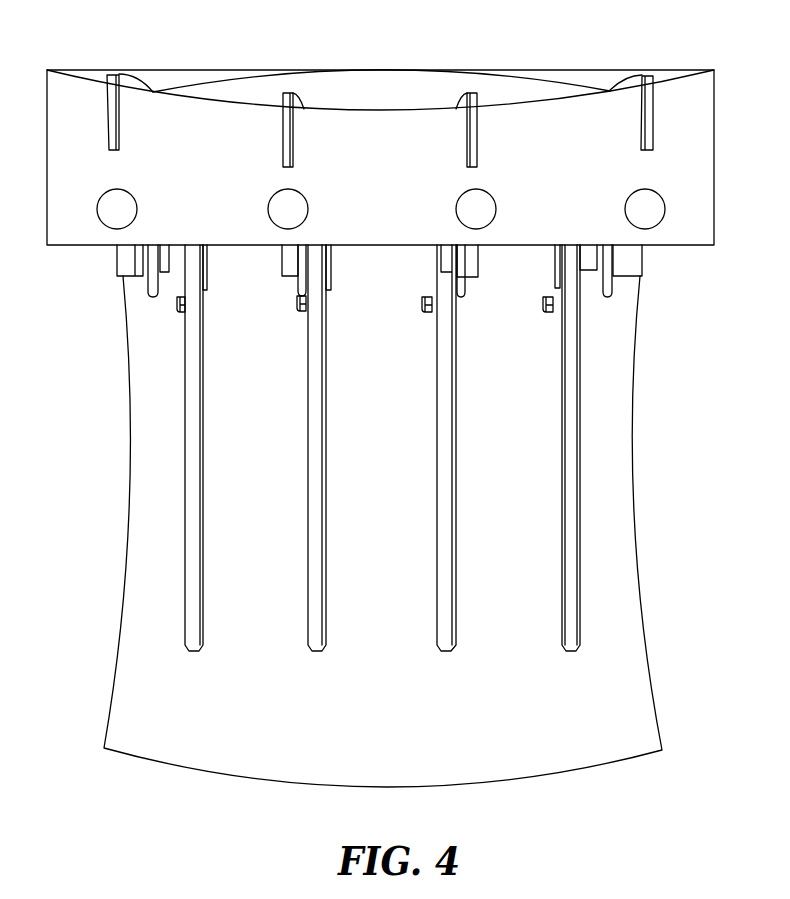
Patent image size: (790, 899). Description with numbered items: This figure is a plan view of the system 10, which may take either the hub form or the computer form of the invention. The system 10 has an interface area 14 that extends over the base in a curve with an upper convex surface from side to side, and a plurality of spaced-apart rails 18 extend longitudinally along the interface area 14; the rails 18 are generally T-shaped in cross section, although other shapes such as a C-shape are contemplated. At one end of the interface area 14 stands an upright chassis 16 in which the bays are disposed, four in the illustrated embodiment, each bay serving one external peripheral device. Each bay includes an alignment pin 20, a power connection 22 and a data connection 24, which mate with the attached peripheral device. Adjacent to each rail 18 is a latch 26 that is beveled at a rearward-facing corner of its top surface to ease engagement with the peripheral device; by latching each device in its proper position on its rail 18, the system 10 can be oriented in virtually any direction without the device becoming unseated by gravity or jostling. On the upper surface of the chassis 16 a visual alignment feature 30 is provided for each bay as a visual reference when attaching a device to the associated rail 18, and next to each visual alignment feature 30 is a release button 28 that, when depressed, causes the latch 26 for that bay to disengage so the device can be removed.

The system 10 is at (183, 788).
The interface area 14 is at (389, 751).
The chassis 16 is at (392, 230).
The rails 18 is at (198, 650).
The alignment pin 20 is at (153, 293).
The power connection 22 is at (596, 268).
The data connection 24 is at (643, 262).
The latch 26 is at (298, 308).
The release buttons 28 is at (137, 207).
The visual alignment feature 30 is at (477, 135).